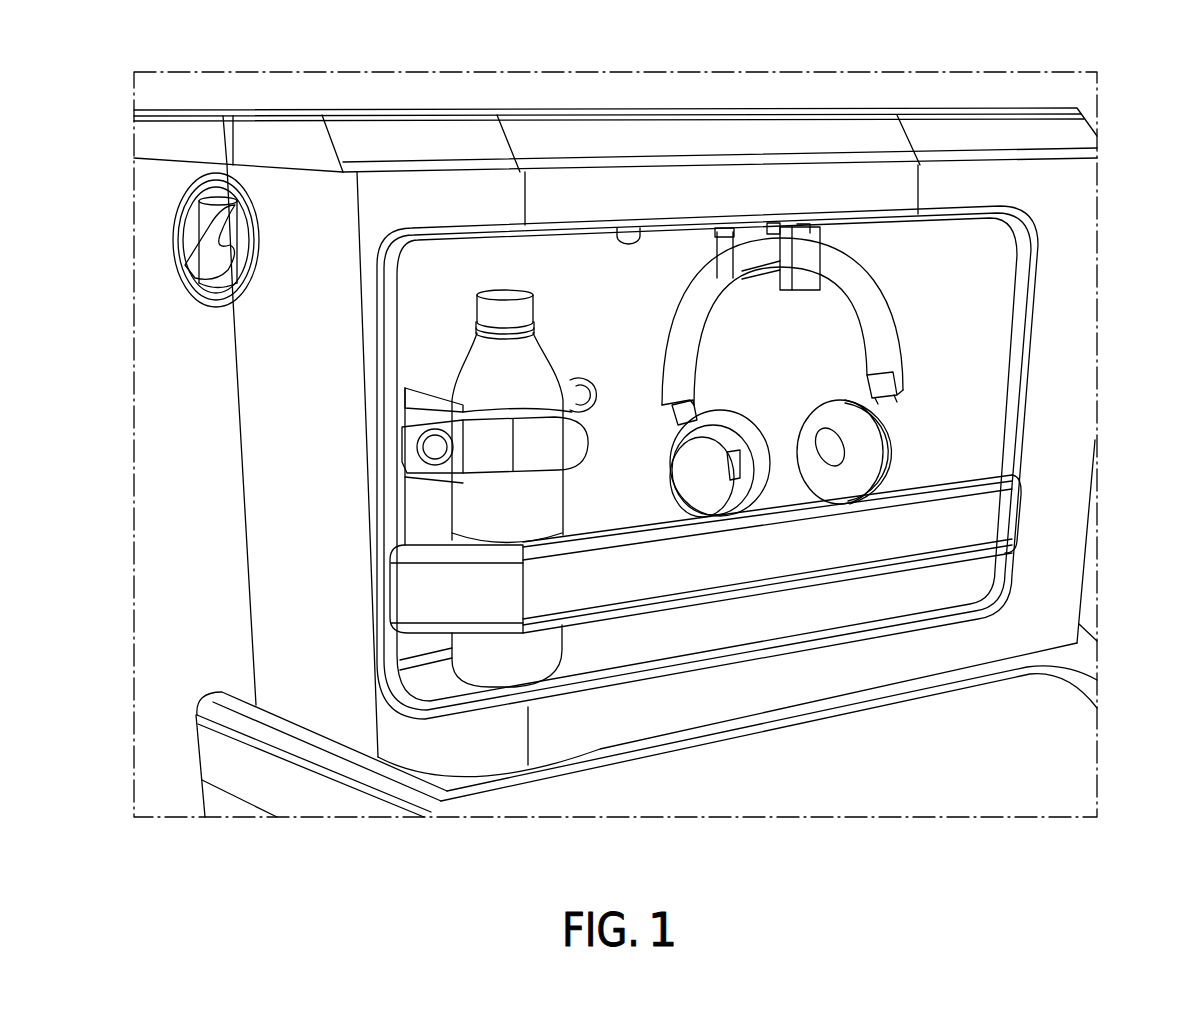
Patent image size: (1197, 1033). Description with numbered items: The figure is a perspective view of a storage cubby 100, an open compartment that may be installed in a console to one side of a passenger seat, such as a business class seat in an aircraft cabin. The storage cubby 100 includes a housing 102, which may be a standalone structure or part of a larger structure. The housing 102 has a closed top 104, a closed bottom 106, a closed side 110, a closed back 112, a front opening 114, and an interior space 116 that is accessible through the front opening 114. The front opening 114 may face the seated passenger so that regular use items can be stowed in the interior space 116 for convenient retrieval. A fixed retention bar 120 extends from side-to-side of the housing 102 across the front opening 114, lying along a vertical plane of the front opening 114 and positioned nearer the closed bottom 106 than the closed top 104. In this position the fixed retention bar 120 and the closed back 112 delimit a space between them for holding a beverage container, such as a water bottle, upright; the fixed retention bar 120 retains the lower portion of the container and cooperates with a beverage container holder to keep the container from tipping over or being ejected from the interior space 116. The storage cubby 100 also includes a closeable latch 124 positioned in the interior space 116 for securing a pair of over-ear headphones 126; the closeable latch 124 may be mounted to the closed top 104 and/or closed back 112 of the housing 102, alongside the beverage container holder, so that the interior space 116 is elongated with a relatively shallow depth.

The storage cubby 100 is at (387, 160).
The housing 102 is at (590, 227).
The closed top 104 is at (643, 237).
The closed bottom 106 is at (950, 587).
The closed side 110 is at (993, 282).
The closed back 112 is at (687, 240).
The front opening 114 is at (977, 418).
The interior space 116 is at (876, 240).
The fixed retention bar 120 is at (997, 512).
The closeable latch 124 is at (803, 237).
The over-ear headphones 126 is at (873, 317).